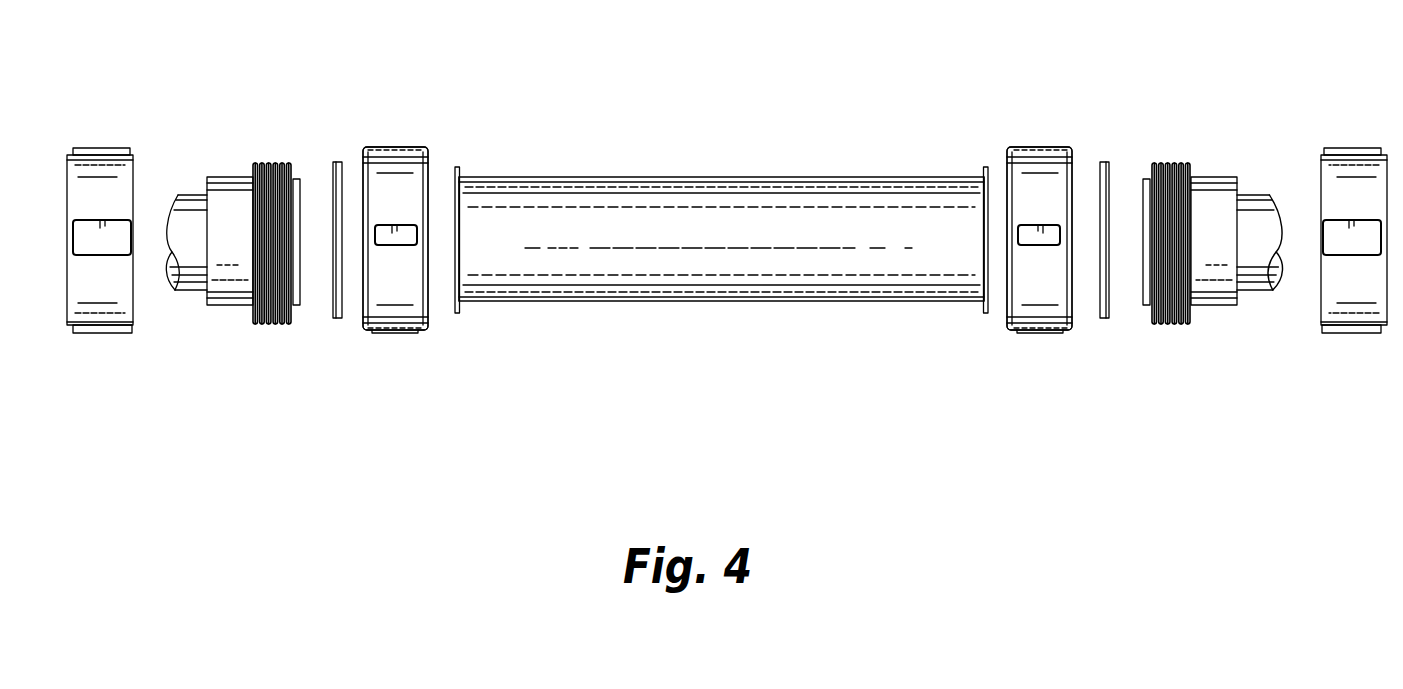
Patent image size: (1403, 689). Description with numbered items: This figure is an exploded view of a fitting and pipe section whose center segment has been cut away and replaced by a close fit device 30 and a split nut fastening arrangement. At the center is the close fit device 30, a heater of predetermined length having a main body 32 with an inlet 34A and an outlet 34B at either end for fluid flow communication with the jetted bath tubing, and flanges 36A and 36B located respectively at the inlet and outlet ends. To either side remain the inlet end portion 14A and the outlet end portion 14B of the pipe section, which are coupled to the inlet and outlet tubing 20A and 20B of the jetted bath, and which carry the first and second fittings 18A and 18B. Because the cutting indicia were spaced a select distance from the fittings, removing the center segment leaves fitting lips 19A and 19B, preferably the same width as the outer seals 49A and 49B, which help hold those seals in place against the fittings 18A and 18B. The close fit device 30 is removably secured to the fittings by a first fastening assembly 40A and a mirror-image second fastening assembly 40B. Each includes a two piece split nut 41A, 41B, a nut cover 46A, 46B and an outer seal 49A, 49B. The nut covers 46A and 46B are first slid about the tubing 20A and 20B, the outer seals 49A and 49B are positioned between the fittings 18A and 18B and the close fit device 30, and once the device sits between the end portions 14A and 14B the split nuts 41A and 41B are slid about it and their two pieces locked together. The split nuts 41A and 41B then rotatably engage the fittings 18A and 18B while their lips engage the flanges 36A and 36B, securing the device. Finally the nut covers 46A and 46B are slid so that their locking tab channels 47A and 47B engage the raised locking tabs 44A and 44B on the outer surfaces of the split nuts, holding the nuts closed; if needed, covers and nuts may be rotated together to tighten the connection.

The close fit device 30 is at (721, 225).
The main body 32 is at (598, 297).
The inlet 34A is at (456, 190).
The outlet 34B is at (987, 190).
The flange 36A is at (458, 173).
The flange 36B is at (986, 173).
The first fastening assembly 40A is at (412, 336).
The second fastening assembly 40B is at (1041, 336).
The split nut 41A is at (398, 147).
The split nut 41B is at (1041, 147).
The locking tabs 44A is at (389, 246).
The locking tabs 44B is at (1049, 246).
The nut cover 46A is at (101, 156).
The nut cover 46B is at (1338, 156).
The locking tab channels 47A is at (100, 250).
The locking tab channels 47B is at (1342, 249).
The outer seal 49A is at (337, 162).
The outer seal 49B is at (1104, 162).
The fitting lip 19A is at (300, 173).
The fitting lip 19B is at (1146, 178).
The first fitting 18A is at (270, 160).
The second fitting 18B is at (1175, 160).
The inlet end portion 14A is at (230, 177).
The outlet end portion 14B is at (1215, 177).
The tubing 20A is at (195, 195).
The tubing 20B is at (1260, 195).